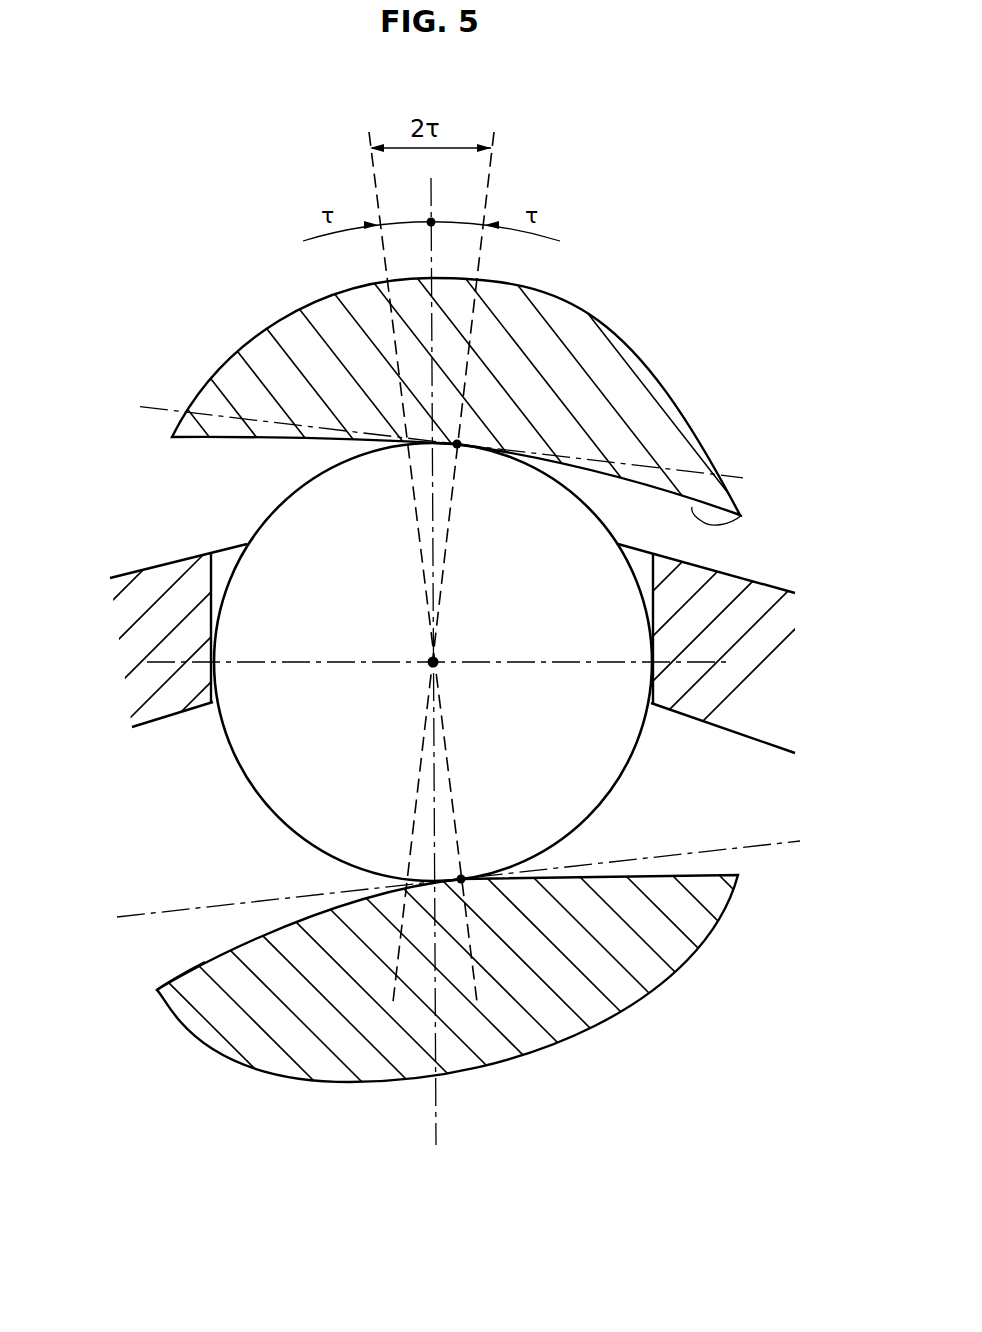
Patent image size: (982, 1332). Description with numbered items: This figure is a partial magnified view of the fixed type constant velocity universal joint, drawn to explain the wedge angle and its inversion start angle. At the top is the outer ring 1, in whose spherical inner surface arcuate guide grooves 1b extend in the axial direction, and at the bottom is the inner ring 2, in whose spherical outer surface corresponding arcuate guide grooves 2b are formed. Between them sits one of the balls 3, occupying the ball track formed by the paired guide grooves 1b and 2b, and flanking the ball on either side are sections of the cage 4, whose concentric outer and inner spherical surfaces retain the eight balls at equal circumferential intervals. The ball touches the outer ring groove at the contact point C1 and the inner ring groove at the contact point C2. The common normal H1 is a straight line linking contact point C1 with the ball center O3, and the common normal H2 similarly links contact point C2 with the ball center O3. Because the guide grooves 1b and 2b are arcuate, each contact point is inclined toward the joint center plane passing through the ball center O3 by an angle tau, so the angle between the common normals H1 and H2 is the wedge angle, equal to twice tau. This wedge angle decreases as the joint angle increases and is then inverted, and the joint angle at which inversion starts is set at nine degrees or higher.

The outer ring 1 is at (278, 340).
The guide grooves 1b is at (742, 515).
The inner ring 2 is at (263, 1010).
The guide grooves 2b is at (176, 979).
The balls 3 is at (278, 777).
The cage 4 is at (753, 603).
The contact point C1 is at (462, 440).
The contact point C2 is at (461, 879).
The ball center O3 is at (451, 679).
The common normal H1 is at (490, 175).
The common normal H2 is at (372, 172).